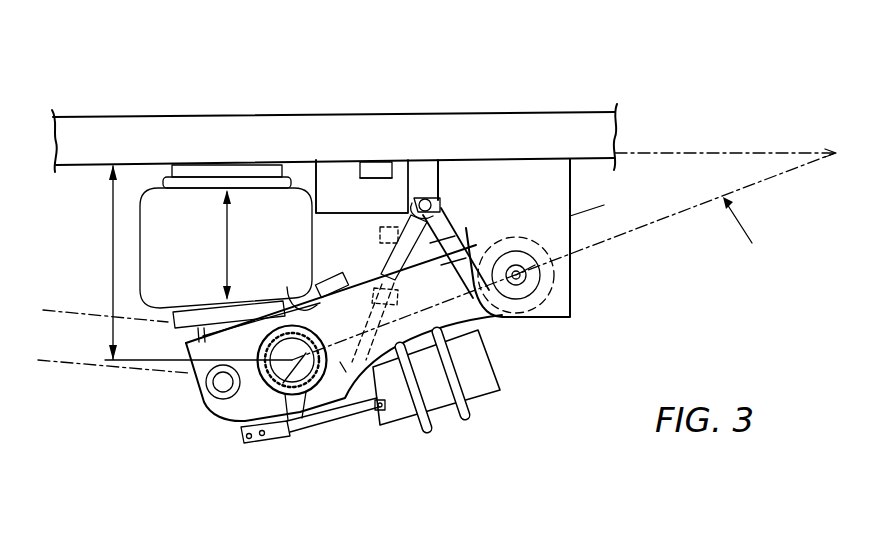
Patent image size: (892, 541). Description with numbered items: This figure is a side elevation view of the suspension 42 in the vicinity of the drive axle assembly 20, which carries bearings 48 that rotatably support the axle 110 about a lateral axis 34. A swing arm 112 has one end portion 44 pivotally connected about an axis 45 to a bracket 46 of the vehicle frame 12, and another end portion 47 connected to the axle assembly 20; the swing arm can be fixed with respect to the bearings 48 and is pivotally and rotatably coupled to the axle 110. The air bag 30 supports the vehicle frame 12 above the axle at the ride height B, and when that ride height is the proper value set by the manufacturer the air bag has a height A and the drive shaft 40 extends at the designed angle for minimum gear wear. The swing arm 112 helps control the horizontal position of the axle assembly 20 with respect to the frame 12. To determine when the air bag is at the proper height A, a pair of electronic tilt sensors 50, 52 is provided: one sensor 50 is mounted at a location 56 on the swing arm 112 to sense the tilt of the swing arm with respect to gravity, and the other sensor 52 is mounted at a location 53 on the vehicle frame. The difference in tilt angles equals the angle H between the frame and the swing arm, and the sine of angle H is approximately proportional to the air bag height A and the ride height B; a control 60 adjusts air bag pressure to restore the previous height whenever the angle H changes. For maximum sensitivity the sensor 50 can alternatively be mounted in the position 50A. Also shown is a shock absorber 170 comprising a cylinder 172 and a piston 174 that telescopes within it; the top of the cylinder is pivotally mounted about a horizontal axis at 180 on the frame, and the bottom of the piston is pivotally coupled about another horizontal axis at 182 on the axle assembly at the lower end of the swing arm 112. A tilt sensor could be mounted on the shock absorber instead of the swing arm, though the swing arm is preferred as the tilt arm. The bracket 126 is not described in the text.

The vehicle frame 12 is at (108, 117).
The suspension 42 is at (187, 80).
The bracket 126 is at (325, 158).
The tilt sensor 52 is at (372, 162).
The location on the vehicle frame 53 is at (387, 160).
The horizontal axis on the frame 180 is at (426, 199).
The shock absorber 170 is at (472, 228).
The cylinder 172 is at (483, 256).
The bracket 46 is at (571, 216).
The end portion of the swing arm 44 is at (547, 287).
The axis 45 is at (525, 283).
The control 60 is at (370, 190).
The tilt sensor 50 is at (332, 275).
The position of the sensor 50A is at (373, 267).
The location on the swing arm 56 is at (318, 309).
The piston 174 is at (348, 360).
The air bag 30 is at (186, 257).
The drive shaft 40 is at (94, 372).
The drive axle assembly 20 is at (240, 418).
The lateral axis 34 is at (260, 388).
The bearings 48 is at (290, 430).
The end portion of the swing arm 47 is at (300, 427).
The axle 110 is at (317, 410).
The swing arm 112 is at (353, 425).
The horizontal axis on the axle assembly 182 is at (448, 420).
The air bag height A is at (227, 240).
The ride height B is at (113, 235).
The tilt angle H is at (715, 142).